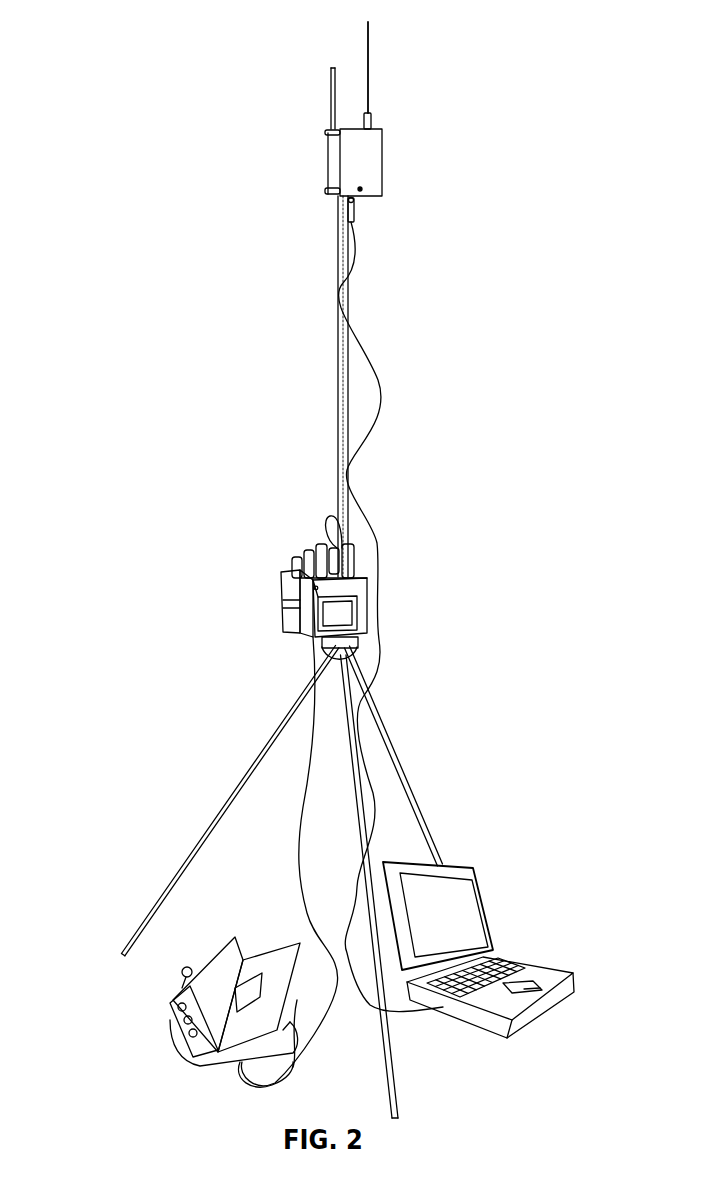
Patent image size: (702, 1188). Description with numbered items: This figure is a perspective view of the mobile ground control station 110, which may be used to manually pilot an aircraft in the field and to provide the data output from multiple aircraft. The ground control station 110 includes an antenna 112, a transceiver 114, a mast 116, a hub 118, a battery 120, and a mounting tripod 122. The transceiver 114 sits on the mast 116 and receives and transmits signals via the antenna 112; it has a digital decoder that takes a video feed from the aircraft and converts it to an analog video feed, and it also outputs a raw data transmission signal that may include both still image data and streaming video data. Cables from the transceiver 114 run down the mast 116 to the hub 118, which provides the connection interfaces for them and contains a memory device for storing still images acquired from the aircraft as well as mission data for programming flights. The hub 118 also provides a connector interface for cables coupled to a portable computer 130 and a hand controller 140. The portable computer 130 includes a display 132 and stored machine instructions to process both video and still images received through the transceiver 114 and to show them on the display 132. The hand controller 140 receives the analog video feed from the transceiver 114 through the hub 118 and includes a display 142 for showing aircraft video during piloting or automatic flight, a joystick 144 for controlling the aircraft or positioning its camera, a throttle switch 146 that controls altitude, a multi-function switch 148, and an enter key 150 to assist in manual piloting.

The mobile ground control station 110 is at (384, 122).
The antenna 112 is at (366, 70).
The transceiver 114 is at (329, 165).
The mast 116 is at (347, 377).
The hub 118 is at (360, 587).
The battery 120 is at (280, 578).
The mounting tripod 122 is at (403, 780).
The portable computer 130 is at (547, 970).
The display 132 is at (460, 903).
The hand controller 140 is at (170, 1003).
The display 142 is at (213, 960).
The joystick 144 is at (180, 990).
The throttle switch 146 is at (178, 1010).
The multi-function switch 148 is at (188, 1028).
The enter key 150 is at (187, 1053).